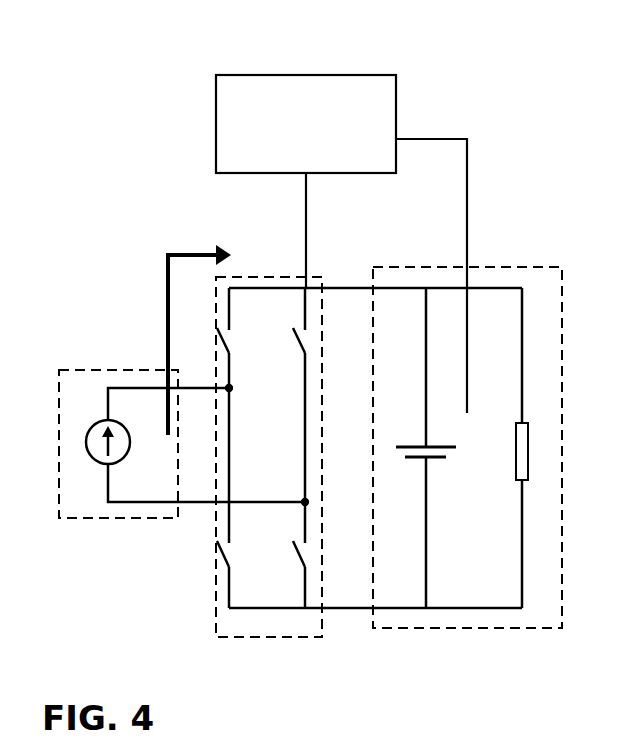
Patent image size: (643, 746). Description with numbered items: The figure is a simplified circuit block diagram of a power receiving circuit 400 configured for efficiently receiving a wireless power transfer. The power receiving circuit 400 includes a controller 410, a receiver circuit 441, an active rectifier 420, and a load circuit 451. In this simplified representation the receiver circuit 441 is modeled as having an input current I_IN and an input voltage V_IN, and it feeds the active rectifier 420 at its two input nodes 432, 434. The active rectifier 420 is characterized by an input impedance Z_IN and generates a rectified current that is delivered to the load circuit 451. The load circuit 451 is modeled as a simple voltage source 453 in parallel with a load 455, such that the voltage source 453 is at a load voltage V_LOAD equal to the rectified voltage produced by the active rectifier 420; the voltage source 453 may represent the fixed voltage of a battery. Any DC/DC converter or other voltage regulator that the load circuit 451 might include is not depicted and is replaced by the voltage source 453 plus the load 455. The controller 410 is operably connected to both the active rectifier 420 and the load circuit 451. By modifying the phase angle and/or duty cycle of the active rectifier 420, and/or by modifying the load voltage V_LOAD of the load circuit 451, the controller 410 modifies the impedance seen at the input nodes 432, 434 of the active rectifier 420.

The power receiving circuit 400 is at (327, 331).
The controller 410 is at (306, 124).
The active rectifier 420 is at (369, 425).
The input node 432 is at (200, 361).
The input node 434 is at (227, 538).
The receiver circuit 441 is at (118, 412).
The load circuit 451 is at (496, 417).
The voltage source 453 is at (440, 448).
The load 455 is at (568, 448).